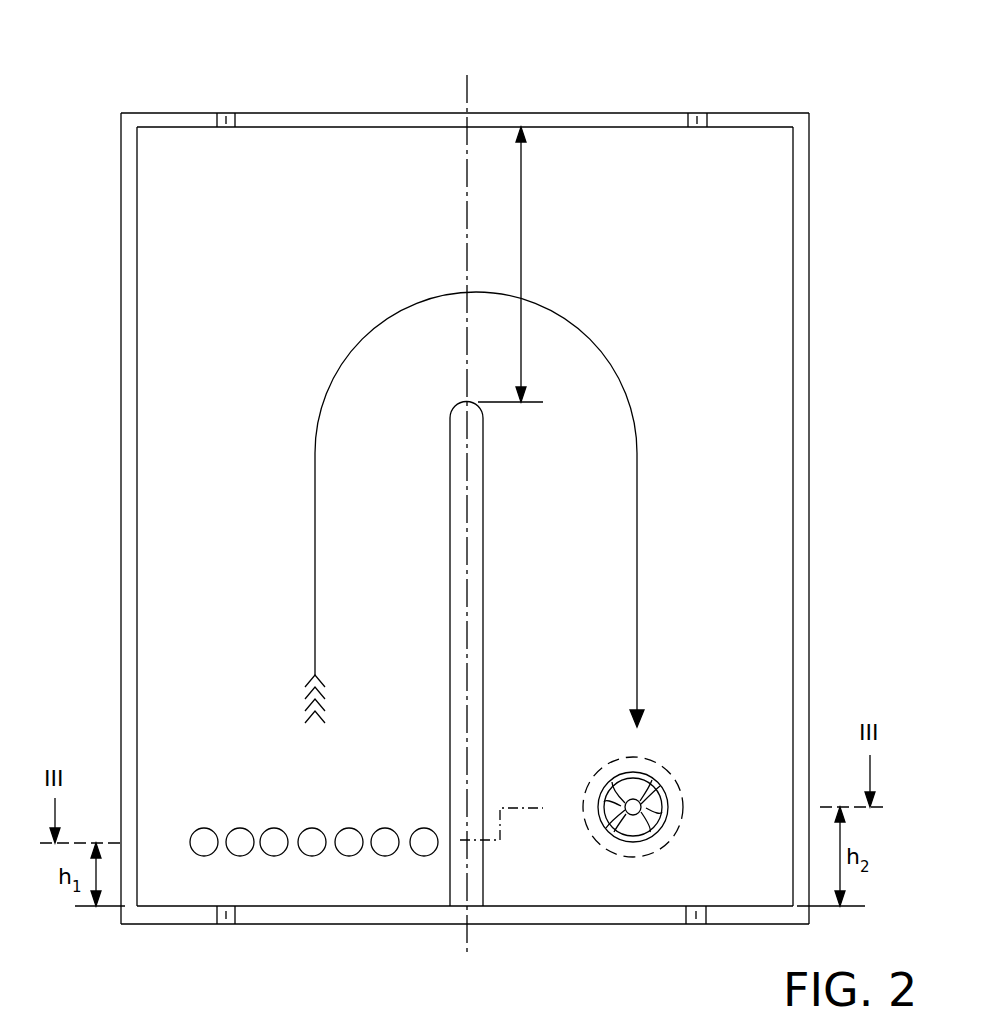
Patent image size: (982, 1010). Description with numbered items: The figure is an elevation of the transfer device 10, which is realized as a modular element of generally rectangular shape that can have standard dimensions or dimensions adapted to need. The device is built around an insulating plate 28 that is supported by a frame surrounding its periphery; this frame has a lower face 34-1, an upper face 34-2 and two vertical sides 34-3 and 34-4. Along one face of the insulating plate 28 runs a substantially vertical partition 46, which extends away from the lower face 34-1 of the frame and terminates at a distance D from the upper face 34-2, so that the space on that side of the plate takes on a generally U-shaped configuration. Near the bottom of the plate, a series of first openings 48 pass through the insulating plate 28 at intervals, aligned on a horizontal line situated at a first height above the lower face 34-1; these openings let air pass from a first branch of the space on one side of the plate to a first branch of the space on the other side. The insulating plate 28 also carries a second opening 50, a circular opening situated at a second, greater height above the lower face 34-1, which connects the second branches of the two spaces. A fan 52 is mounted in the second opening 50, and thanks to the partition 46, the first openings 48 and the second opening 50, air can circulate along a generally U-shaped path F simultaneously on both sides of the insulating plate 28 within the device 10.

The transfer device 10 is at (740, 80).
The insulating plate 28 is at (352, 195).
The lower face of the frame 34-1 is at (527, 912).
The upper face of the frame 34-2 is at (553, 115).
The vertical side of the frame 34-3 is at (122, 370).
The vertical side of the frame 34-4 is at (810, 350).
The vertical partition 46 is at (480, 567).
The first openings 48 is at (274, 828).
The second opening 50 is at (643, 845).
The fan 52 is at (656, 785).